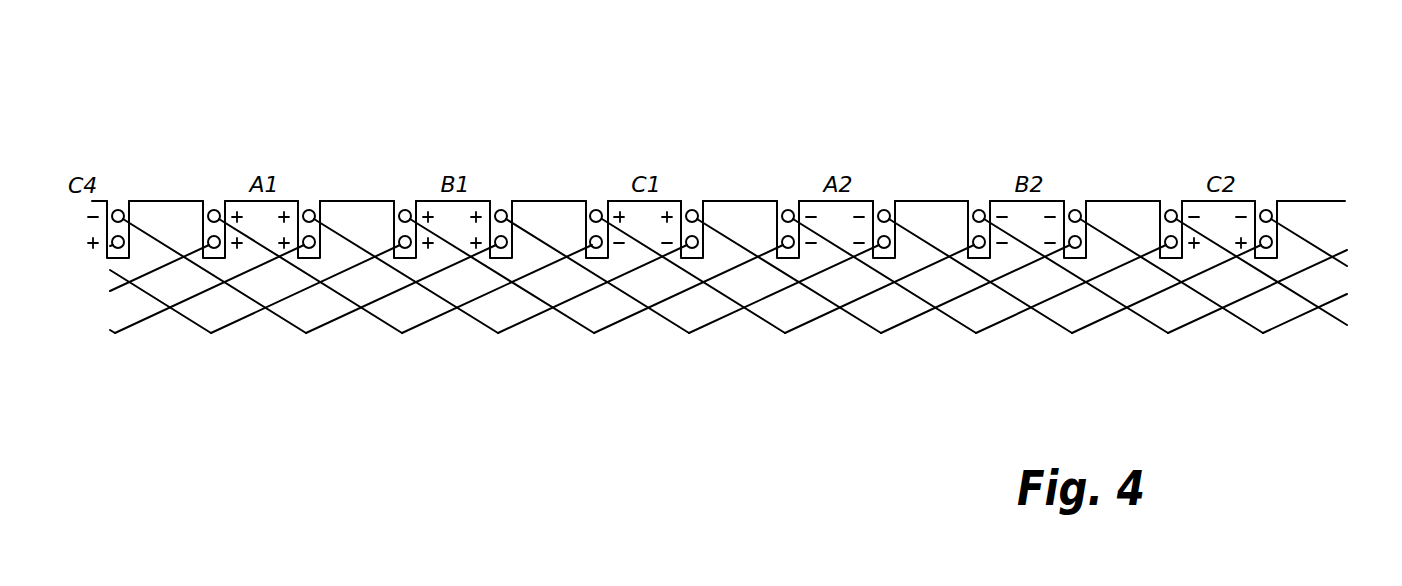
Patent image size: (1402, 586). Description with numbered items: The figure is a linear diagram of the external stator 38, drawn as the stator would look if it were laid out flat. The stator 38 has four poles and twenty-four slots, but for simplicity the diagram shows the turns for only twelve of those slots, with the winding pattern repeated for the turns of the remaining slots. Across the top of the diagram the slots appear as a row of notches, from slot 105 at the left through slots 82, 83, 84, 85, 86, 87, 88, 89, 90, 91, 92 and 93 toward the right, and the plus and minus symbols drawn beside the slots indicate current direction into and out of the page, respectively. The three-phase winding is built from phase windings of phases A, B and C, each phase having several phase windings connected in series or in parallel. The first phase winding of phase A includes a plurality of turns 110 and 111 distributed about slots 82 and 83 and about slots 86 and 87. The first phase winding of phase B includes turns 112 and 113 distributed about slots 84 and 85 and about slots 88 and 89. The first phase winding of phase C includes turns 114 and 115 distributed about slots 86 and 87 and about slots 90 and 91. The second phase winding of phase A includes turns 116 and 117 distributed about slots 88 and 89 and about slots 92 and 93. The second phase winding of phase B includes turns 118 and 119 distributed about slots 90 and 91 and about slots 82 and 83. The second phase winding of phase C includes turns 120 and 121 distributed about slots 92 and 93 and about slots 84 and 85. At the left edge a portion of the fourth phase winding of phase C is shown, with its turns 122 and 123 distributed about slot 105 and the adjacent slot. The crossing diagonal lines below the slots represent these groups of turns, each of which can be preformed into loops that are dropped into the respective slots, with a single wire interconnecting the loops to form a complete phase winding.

The stator 38 is at (948, 100).
The slot 105 is at (117, 205).
The slot 82 is at (213, 205).
The slot 83 is at (308, 205).
The slot 84 is at (404, 205).
The slot 85 is at (500, 205).
The slot 86 is at (596, 205).
The slot 87 is at (691, 205).
The slot 88 is at (787, 205).
The slot 89 is at (883, 205).
The slot 90 is at (978, 205).
The slot 91 is at (1074, 205).
The slot 92 is at (1170, 205).
The slot 93 is at (1265, 205).
The turns 110 is at (387, 327).
The turns 111 is at (483, 327).
The turns 112 is at (578, 327).
The turns 113 is at (674, 327).
The turns 114 is at (770, 327).
The turns 115 is at (866, 327).
The turns 116 is at (961, 327).
The turns 117 is at (1057, 327).
The turns 118 is at (1153, 327).
The turns 119 is at (1248, 327).
The turns 120 is at (1346, 323).
The turns 121 is at (1344, 268).
The turns 122 is at (230, 329).
The turns 123 is at (291, 327).